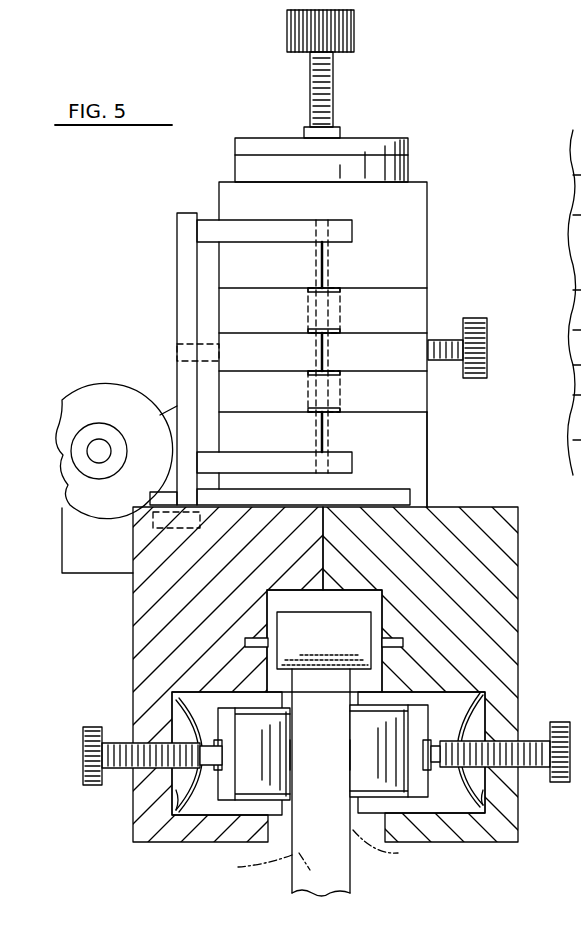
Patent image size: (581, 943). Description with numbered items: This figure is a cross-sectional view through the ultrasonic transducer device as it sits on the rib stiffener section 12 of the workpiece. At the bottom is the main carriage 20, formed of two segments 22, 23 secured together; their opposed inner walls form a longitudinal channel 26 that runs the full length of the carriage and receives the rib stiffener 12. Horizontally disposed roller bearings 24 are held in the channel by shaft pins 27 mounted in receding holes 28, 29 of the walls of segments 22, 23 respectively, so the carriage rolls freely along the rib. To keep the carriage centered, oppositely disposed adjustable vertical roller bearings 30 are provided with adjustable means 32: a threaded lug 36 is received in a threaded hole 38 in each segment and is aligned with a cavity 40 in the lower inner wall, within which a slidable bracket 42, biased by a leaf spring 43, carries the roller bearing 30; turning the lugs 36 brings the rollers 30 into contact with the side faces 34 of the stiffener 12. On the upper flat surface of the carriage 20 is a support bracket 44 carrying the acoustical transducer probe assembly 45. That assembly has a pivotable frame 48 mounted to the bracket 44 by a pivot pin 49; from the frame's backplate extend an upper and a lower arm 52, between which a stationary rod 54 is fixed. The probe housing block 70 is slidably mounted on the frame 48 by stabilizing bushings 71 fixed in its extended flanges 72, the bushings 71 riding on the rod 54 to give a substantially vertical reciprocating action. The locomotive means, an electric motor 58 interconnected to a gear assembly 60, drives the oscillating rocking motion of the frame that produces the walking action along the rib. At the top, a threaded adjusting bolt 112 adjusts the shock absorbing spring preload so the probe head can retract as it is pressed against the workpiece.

The threaded adjusting bolt 112 is at (334, 96).
The arm 52 is at (352, 232).
The acoustical transducer probe assembly 45 is at (398, 266).
The pivotable frame 48 is at (212, 262).
The support bracket 44 is at (184, 282).
The stabilizing bushing 71 is at (342, 295).
The pivot pin 49 is at (176, 352).
The extended flange 72 is at (266, 312).
The stationary rod 54 is at (330, 346).
The electric motor 58 is at (95, 392).
The probe housing block 70 is at (418, 462).
The main carriage 20 is at (290, 637).
The gear assembly 60 is at (76, 574).
The segment 22 is at (140, 648).
The segment 23 is at (500, 603).
The longitudinal channel 26 is at (355, 592).
The shaft pin 27 is at (368, 641).
The receding hole 28 is at (256, 638).
The receding hole 29 is at (394, 640).
The roller bearing 24 is at (320, 670).
The adjustable means 32 is at (174, 738).
The threaded lug 36 is at (88, 745).
The threaded hole 38 is at (152, 768).
The slidable bracket 42 is at (208, 715).
The leaf spring 43 is at (176, 795).
The cavity 40 is at (190, 820).
The adjustable vertical roller bearing 30 is at (268, 758).
The side face 34 is at (317, 855).
The rib stiffener section 12 is at (353, 884).